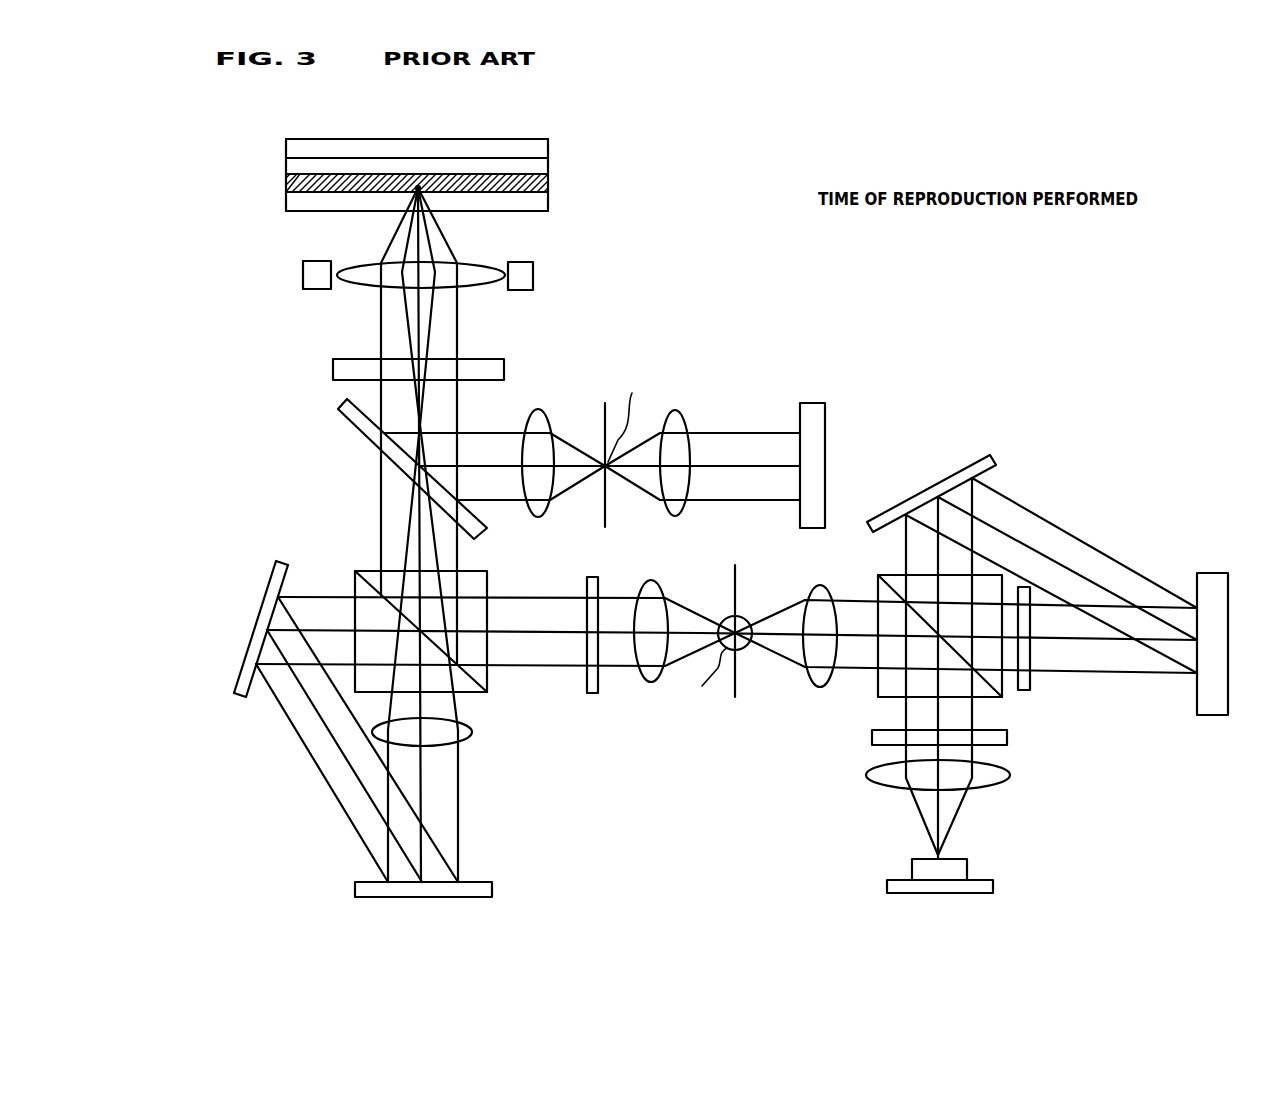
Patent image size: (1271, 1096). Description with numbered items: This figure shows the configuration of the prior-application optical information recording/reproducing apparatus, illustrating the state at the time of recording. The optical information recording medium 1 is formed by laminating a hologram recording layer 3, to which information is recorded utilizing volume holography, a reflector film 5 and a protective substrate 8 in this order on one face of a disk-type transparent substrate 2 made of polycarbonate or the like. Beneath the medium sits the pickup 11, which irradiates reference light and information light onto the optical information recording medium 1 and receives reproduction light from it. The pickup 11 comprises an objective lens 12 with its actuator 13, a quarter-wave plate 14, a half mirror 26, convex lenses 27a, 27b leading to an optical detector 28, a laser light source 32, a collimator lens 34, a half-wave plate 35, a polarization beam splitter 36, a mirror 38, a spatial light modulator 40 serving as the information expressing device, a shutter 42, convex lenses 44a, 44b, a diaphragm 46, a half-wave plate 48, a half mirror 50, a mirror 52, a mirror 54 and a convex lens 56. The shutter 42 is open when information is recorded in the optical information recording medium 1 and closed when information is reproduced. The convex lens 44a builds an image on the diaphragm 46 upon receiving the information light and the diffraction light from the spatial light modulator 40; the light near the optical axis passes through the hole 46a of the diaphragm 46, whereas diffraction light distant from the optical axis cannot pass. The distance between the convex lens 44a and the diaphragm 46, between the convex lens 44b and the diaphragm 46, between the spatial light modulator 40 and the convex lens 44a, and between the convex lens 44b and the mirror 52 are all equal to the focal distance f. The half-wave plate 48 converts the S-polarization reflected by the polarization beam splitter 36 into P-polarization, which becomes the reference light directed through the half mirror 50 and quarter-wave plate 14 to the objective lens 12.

The optical information recording medium 1 is at (572, 173).
The transparent substrate 2 is at (286, 201).
The hologram recording layer 3 is at (286, 186).
The reflector film 5 is at (286, 166).
The substrate (protective layer) 8 is at (286, 147).
The pickup 11 is at (1138, 828).
The objective lens 12 is at (497, 263).
The actuator 13 is at (303, 273).
The quarter-wave plate 14 is at (333, 370).
The half mirror 26 is at (353, 425).
The convex lens 27a is at (535, 517).
The convex lens 27b is at (672, 517).
The optical detector 28 is at (820, 452).
The laser light source 32 is at (887, 884).
The collimator lens 34 is at (1000, 764).
The half-wave plate 35 is at (872, 736).
The polarization beam splitter 36 is at (878, 591).
The mirror 38 is at (996, 460).
The spatial light modulator (information expressing device) 40 is at (1207, 576).
The shutter 42 is at (1022, 691).
The convex lens 44a is at (815, 690).
The convex lens 44b is at (645, 684).
The diaphragm 46 is at (738, 678).
The hole 46a is at (738, 618).
The half-wave plate 48 is at (593, 578).
The half mirror 50 is at (487, 691).
The mirror 52 is at (261, 611).
The mirror 54 is at (492, 889).
The convex lens 56 is at (470, 733).